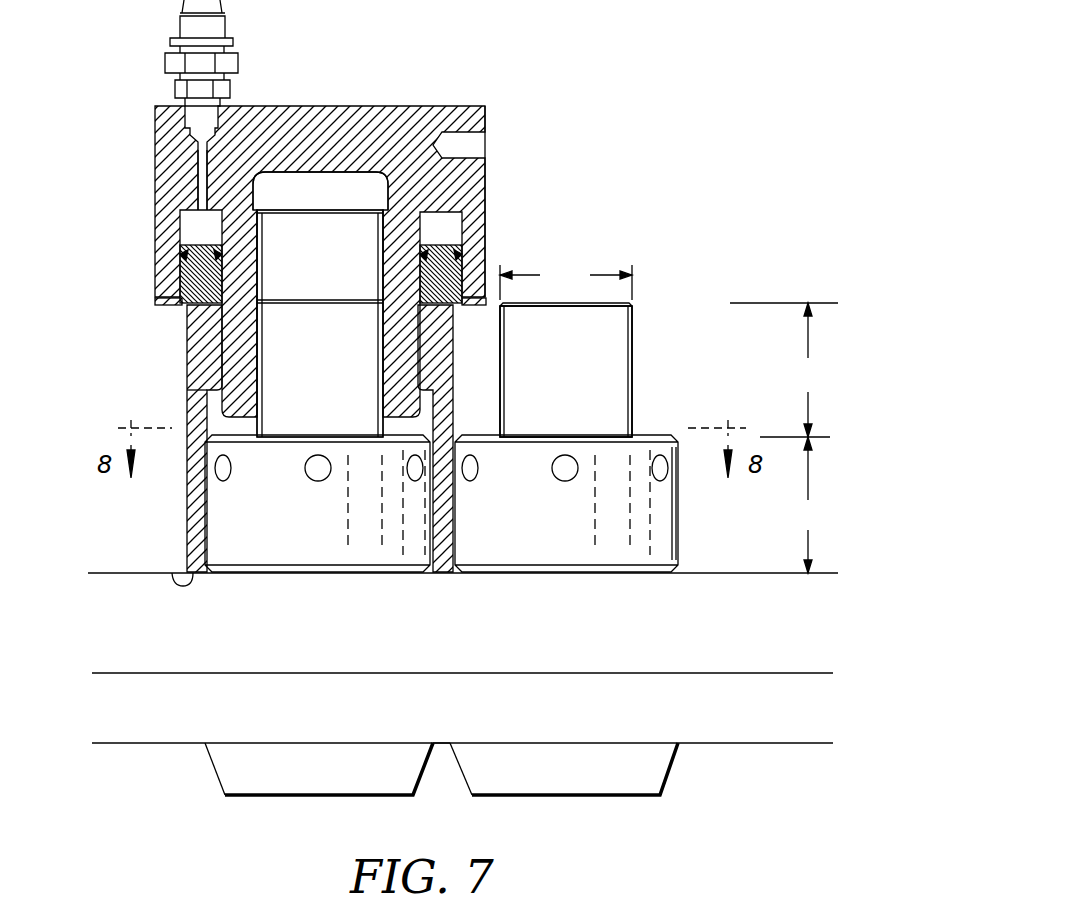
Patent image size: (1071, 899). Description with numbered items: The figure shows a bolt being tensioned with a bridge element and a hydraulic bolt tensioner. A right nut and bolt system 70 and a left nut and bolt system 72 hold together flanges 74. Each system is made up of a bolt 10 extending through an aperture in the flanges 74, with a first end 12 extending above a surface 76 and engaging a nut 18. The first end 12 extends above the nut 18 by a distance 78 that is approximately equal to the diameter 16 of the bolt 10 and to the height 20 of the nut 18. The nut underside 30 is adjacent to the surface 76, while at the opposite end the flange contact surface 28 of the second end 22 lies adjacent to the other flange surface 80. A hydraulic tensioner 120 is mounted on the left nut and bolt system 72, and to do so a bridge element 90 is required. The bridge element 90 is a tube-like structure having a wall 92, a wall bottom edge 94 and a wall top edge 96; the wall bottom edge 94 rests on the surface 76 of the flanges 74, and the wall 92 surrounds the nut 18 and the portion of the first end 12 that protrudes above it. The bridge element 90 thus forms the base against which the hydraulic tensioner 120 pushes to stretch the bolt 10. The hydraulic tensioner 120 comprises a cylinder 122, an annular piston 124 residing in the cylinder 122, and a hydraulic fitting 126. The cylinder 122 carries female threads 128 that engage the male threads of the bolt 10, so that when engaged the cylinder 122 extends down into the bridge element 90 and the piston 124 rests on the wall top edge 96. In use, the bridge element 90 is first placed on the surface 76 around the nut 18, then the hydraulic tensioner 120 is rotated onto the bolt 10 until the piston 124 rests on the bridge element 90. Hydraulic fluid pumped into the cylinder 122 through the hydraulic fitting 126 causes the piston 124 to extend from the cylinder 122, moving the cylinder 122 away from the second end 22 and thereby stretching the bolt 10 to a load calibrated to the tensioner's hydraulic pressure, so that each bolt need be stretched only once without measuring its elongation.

The bolt 10 is at (365, 305).
The first end 12 is at (258, 347).
The diameter 16 is at (566, 280).
The nut 18 is at (205, 512).
The height 20 is at (810, 505).
The second end 22 is at (318, 798).
The flange contact surface 28 is at (477, 743).
The nut underside 30 is at (623, 574).
The right nut and bolt system 70 is at (650, 332).
The left nut and bolt system 72 is at (286, 292).
The flanges 74 is at (792, 672).
The surface 76 is at (115, 573).
The distance 78 is at (784, 370).
The other flange surface 80 is at (147, 745).
The bridge element 90 is at (187, 365).
The wall 92 is at (187, 393).
The wall bottom edge 94 is at (187, 572).
The wall top edge 96 is at (180, 288).
The hydraulic tensioner 120 is at (443, 104).
The cylinder 122 is at (486, 207).
The piston 124 is at (180, 262).
The hydraulic fitting 126 is at (222, 38).
The female threads 128 is at (384, 245).